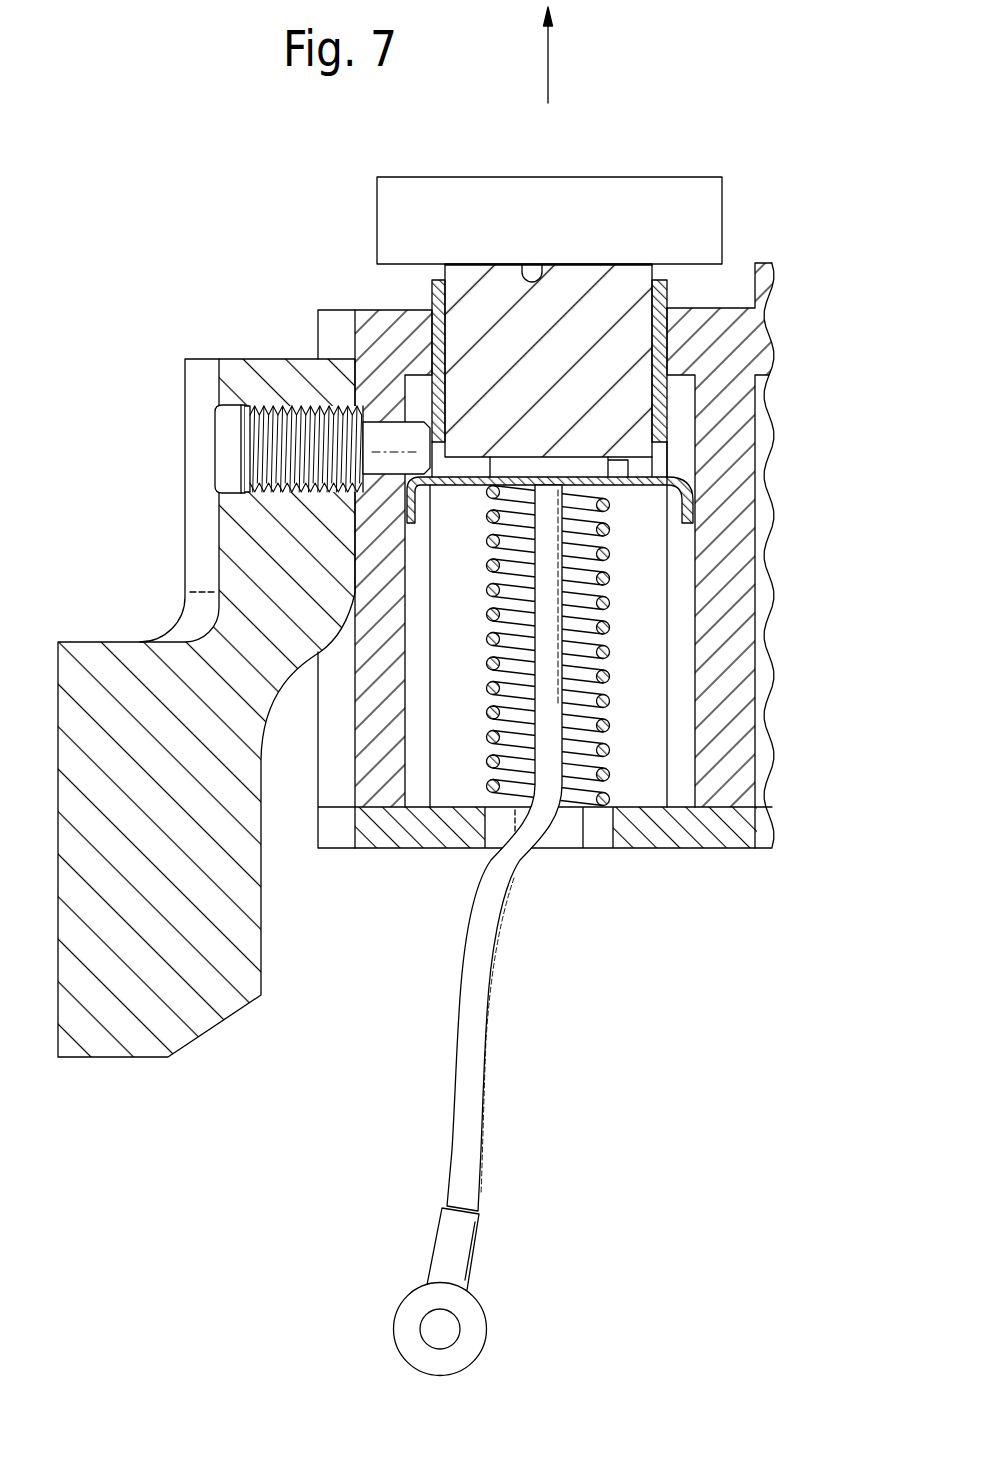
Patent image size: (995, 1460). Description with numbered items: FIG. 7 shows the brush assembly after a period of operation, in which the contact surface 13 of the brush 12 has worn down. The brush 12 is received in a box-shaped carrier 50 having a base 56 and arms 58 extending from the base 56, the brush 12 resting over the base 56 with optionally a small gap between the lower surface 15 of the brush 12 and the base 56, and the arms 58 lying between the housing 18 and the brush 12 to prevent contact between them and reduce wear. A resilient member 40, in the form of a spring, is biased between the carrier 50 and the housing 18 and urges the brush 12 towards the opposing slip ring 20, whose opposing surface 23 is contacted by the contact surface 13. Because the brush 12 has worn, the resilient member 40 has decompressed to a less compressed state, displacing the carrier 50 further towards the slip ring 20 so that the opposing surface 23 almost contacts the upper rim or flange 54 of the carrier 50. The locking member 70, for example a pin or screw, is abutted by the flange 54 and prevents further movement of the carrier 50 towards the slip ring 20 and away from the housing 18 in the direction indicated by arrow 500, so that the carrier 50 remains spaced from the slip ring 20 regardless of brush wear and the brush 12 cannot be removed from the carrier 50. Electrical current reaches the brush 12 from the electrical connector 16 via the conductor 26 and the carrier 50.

The arrow 500 is at (552, 63).
The slip ring 20 is at (392, 210).
The brush 12 is at (488, 297).
The opposing surface 23 is at (540, 270).
The contact surface 13 is at (612, 264).
The arm 58 is at (433, 300).
The carrier 50 is at (667, 403).
The flange 54 is at (693, 500).
The lower surface 15 is at (627, 460).
The housing 18 is at (732, 620).
The resilient member 40 is at (603, 752).
The base 56 is at (453, 485).
The locking member 70 is at (262, 428).
The conductor 26 is at (468, 1074).
The electrical connector 16 is at (470, 1318).